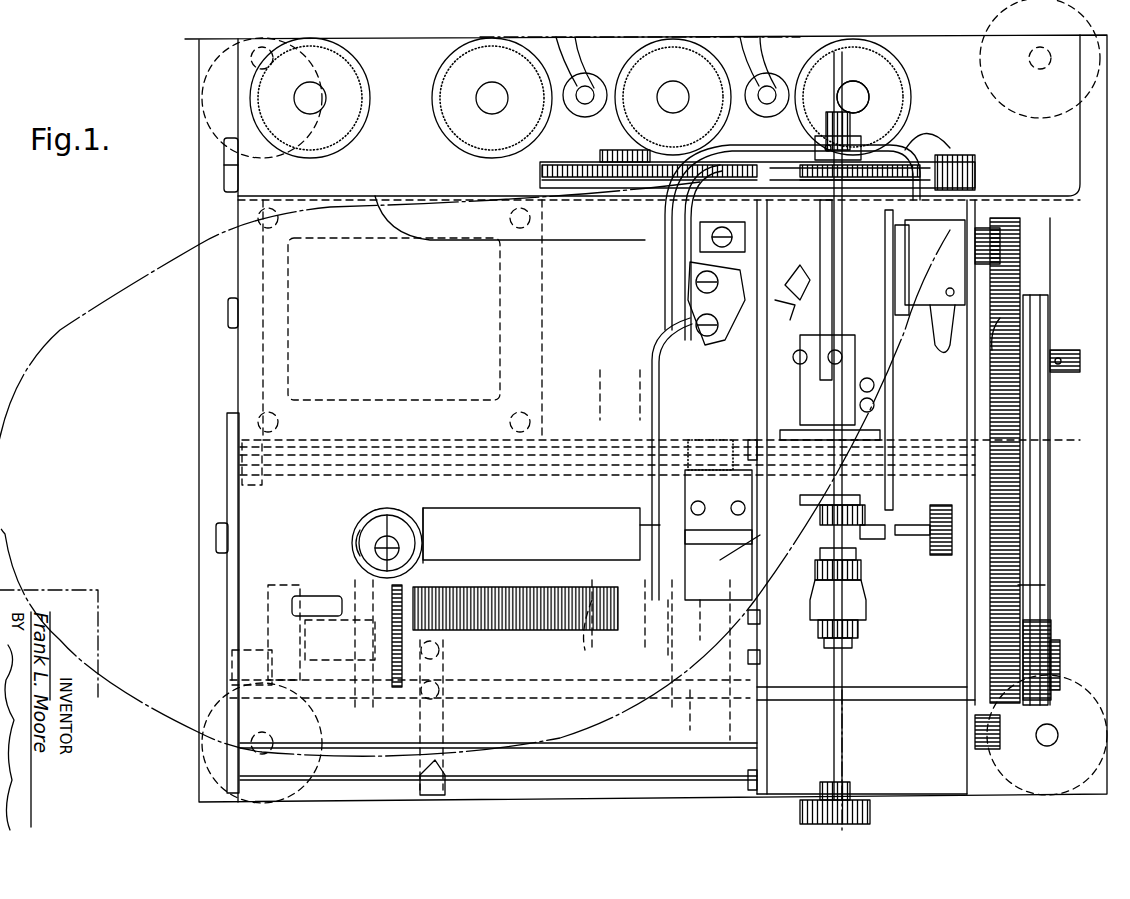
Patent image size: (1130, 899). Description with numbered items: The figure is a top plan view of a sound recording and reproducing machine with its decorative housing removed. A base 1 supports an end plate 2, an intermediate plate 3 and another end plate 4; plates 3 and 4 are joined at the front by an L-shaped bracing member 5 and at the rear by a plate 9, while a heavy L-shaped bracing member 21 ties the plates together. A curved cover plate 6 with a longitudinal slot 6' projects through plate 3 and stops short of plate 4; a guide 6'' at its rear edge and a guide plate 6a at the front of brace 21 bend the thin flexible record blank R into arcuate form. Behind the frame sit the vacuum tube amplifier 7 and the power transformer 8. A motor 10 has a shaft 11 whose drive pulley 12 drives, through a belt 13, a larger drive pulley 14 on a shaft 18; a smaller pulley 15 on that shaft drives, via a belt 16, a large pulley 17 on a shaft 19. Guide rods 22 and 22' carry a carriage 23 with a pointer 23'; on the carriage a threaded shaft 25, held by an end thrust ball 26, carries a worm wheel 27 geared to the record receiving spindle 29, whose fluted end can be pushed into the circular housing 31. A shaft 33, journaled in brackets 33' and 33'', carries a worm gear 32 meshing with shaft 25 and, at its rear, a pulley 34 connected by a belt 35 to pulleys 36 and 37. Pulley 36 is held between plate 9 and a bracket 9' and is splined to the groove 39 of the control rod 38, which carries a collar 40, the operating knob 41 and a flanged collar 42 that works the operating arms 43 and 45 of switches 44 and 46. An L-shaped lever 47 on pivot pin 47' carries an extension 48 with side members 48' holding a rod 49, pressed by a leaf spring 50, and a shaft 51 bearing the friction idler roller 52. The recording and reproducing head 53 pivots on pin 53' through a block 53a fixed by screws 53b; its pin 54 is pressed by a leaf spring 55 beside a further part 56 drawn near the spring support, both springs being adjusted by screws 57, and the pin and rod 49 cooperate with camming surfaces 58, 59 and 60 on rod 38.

The base 1 is at (197, 178).
The end plate 2 is at (227, 632).
The intermediate plate 3 is at (755, 412).
The end plate 4 is at (856, 52).
The L-shaped bracing member 5 is at (935, 772).
The curved cover plate 6 is at (614, 471).
The longitudinal slot 6' is at (541, 518).
The guide 6'' is at (510, 242).
The guide plate 6a is at (602, 752).
The vacuum tube amplifier 7 is at (652, 418).
The power transformer 8 is at (288, 312).
The rear plate 9 is at (792, 237).
The bracket 9' is at (936, 112).
The motor 10 is at (880, 636).
The motor shaft 11 is at (1062, 656).
The drive pulley 12 is at (1052, 622).
The belt 13 is at (1040, 540).
The drive pulley 14 is at (1052, 462).
The pulley 15 is at (1000, 318).
The belt 16 is at (1000, 405).
The pulley 17 is at (1048, 585).
The shaft 18 is at (1066, 348).
The shaft 19 is at (918, 530).
The L-shaped bracing member 21 is at (275, 471).
The guide rod 22 is at (618, 448).
The guide rod 22' is at (702, 710).
The carriage 23 is at (498, 789).
The pointer 23' is at (436, 797).
The threaded shaft 25 is at (505, 622).
The end thrust ball 26 is at (300, 606).
The worm wheel 27 is at (398, 692).
The record receiving spindle 29 is at (378, 551).
The circular housing 31 is at (380, 522).
The worm gear 32 is at (652, 638).
The shaft 33 is at (600, 395).
The bracket 33' is at (605, 632).
The bracket 33'' is at (650, 252).
The pulley 34 is at (562, 162).
The belt 35 is at (540, 172).
The pulley 36 is at (850, 161).
The pulley 37 is at (975, 163).
The rod 38 is at (860, 98).
The groove 39 is at (856, 83).
The collar 40 is at (848, 133).
The operating knob 41 is at (798, 818).
The flanged collar 42 is at (890, 293).
The operating arm 43 is at (935, 262).
The switch 44 is at (950, 225).
The operating arm 45 is at (790, 290).
The switch 46 is at (690, 305).
The L-shaped lever 47 is at (896, 360).
The pivot pin 47' is at (1008, 217).
The extension 48 is at (829, 424).
The side members 48' is at (854, 572).
The rod 49 is at (870, 495).
The leaf spring 50 is at (880, 440).
The shaft 51 is at (900, 560).
The friction idler roller 52 is at (737, 639).
The recording and reproducing head 53 is at (663, 520).
The block 53a is at (708, 495).
The screws 53b is at (690, 512).
The pivot pin 53' is at (698, 628).
The pin 54 is at (880, 580).
The leaf spring 55 is at (722, 547).
The screw 56 is at (875, 392).
The screws 57 is at (820, 370).
The camming surface 58 is at (870, 605).
The camming surface 59 is at (860, 635).
The camming surface 60 is at (858, 560).
The record blank R is at (60, 330).